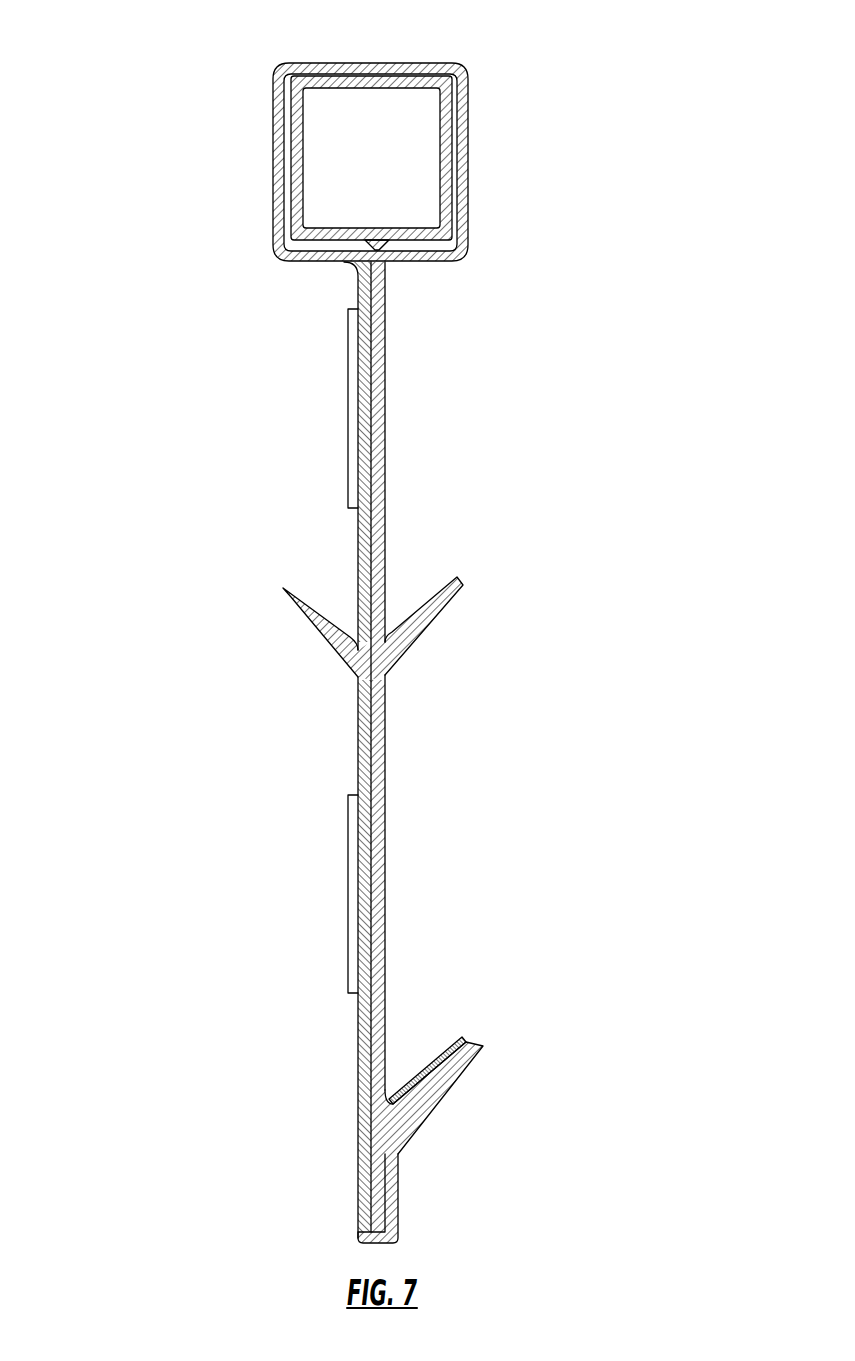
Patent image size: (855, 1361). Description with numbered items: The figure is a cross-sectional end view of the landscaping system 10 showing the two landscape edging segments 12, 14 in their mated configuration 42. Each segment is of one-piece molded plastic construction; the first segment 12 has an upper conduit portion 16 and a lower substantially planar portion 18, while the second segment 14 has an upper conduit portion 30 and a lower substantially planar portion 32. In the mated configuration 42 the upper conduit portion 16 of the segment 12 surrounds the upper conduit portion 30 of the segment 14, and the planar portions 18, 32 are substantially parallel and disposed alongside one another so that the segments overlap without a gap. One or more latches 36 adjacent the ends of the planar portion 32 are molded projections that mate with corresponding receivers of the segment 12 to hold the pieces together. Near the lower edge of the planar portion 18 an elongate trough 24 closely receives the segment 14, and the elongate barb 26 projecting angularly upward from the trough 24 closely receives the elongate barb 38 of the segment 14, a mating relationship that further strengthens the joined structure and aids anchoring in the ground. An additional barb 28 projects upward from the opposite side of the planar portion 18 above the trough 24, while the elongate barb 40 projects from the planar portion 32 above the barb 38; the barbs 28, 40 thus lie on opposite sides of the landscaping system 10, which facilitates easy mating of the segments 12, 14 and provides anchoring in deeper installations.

The landscaping system 10 is at (478, 57).
The landscape edging segment 12 is at (358, 289).
The landscape edging segment 14 is at (386, 367).
The upper conduit portion 16 is at (278, 163).
The lower substantially planar portion 18 is at (366, 713).
The elongate trough 24 is at (370, 1214).
The elongate barb 26 is at (458, 1078).
The additional barb 28 is at (323, 627).
The upper conduit portion 30 is at (445, 165).
The lower substantially planar portion 32 is at (385, 708).
The latch 36 is at (348, 410).
The elongate barb 38 is at (448, 1053).
The elongate barb 40 is at (434, 615).
The mated configuration 42 is at (98, 182).